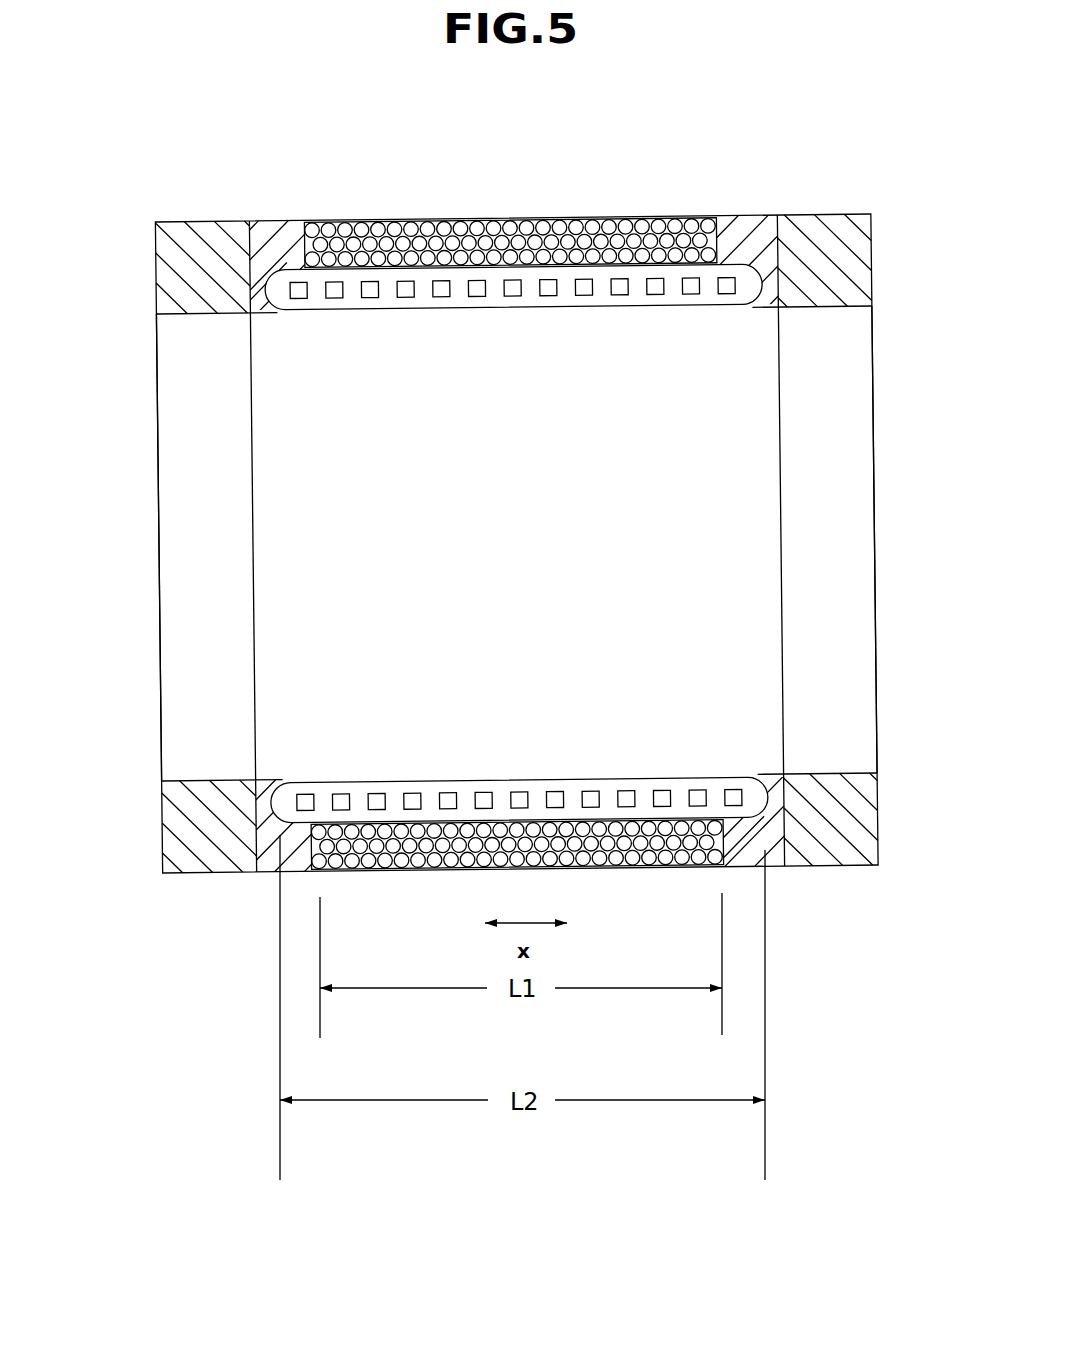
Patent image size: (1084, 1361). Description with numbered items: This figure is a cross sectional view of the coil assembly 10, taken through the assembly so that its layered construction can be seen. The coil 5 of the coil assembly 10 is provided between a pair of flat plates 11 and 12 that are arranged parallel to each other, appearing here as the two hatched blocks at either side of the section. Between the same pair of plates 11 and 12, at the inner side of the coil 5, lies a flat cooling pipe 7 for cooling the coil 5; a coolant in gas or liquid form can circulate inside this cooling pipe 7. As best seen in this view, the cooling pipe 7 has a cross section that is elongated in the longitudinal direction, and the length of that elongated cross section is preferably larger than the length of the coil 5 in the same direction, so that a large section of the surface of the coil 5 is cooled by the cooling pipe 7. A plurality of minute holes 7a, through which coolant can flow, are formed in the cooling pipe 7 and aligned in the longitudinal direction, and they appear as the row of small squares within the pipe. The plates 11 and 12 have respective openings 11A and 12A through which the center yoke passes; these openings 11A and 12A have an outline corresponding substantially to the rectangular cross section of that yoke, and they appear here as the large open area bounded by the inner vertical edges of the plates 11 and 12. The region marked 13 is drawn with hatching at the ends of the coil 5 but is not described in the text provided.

The coil assembly 10 is at (667, 156).
The flat plate 11 is at (870, 268).
The opening 11A is at (868, 465).
The flat plate 12 is at (159, 256).
The opening 12A is at (159, 391).
The sealing member 13 is at (286, 275).
The coil 5 is at (500, 222).
The flat cooling pipe 7 is at (289, 272).
The minute holes 7a is at (732, 278).